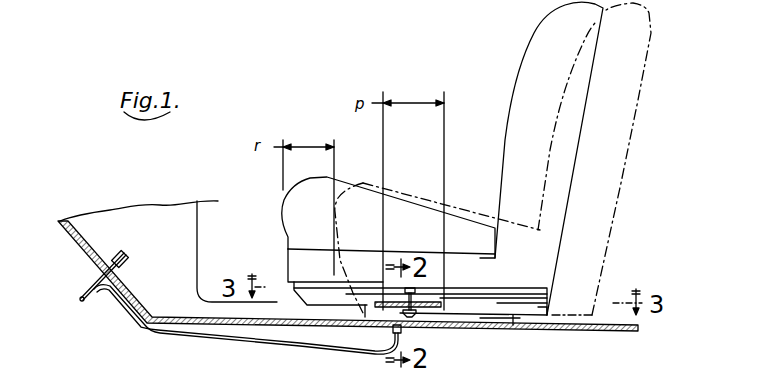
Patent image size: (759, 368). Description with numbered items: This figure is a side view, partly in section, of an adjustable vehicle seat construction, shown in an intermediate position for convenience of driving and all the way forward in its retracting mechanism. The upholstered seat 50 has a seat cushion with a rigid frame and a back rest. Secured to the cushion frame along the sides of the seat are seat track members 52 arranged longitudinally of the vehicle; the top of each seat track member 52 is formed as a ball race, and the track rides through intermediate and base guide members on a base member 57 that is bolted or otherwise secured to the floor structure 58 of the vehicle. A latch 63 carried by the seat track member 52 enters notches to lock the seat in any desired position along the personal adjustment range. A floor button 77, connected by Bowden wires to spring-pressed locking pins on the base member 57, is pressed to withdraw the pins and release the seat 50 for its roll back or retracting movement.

The upholstered seat 50 is at (303, 188).
The seat track member 52 is at (545, 307).
The base member 57 is at (497, 320).
The floor structure 58 is at (78, 241).
The latch 63 is at (404, 290).
The floor button 77 is at (126, 254).